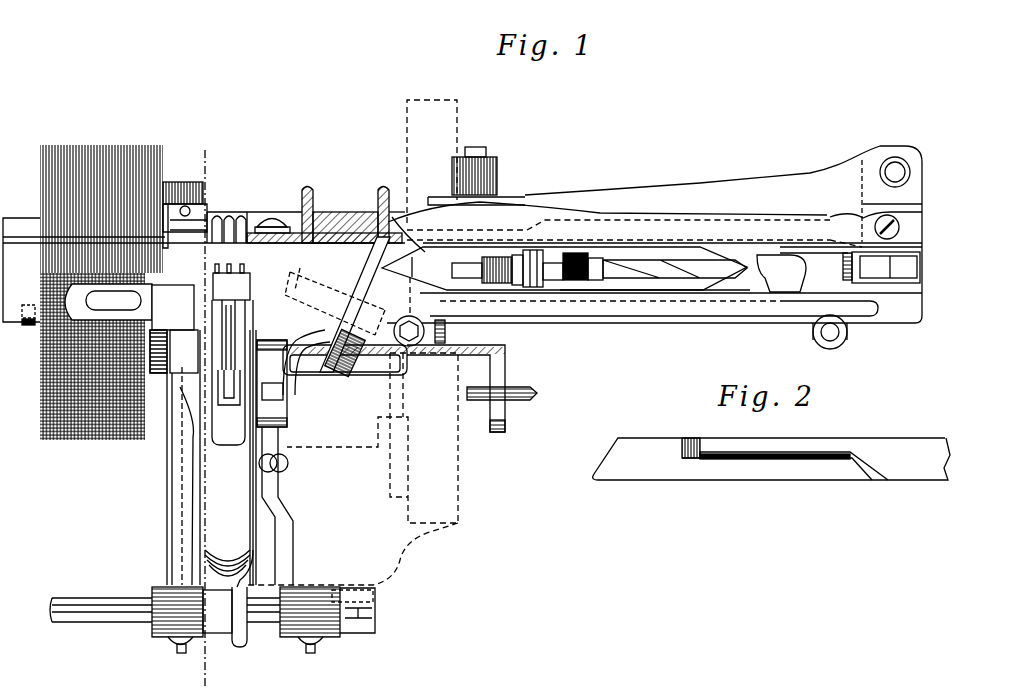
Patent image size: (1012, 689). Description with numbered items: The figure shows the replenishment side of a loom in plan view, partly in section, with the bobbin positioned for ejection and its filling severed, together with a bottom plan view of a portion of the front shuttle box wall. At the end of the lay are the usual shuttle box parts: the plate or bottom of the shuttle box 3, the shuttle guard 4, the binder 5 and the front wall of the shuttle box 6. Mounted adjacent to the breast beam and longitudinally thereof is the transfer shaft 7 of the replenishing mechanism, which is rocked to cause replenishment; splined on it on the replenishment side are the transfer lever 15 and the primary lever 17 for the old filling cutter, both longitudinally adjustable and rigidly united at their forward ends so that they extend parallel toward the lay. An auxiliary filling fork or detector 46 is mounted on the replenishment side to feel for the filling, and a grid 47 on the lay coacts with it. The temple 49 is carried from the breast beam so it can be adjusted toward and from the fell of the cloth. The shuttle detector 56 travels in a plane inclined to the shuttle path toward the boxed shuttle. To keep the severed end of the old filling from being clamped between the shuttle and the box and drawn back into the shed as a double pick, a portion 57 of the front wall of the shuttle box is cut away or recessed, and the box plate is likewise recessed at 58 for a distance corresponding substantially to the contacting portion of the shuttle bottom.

In FIG. 1, the plate or bottom of the shuttle box 3 is at (867, 293).
In FIG. 1, the shuttle guard 4 is at (586, 170).
In FIG. 1, the binder 5 is at (692, 192).
In FIG. 1, the front wall of the shuttle box 6 is at (543, 308).
In FIG. 2, the front wall of the shuttle box 6 is at (916, 452).
In FIG. 1, the transfer shaft 7 is at (118, 624).
In FIG. 1, the transfer lever 15 is at (278, 512).
In FIG. 1, the primary lever for the old filling cutter 17 is at (175, 500).
In FIG. 1, the auxiliary filling fork or detector 46 is at (250, 283).
In FIG. 1, the grid 47 is at (229, 215).
In FIG. 1, the temple 49 is at (152, 297).
In FIG. 1, the shuttle detector 56 is at (377, 256).
In FIG. 2, the recessed portion of the front wall of the shuttle box 57 is at (766, 469).
In FIG. 1, the recessed portion of the box plate 58 is at (413, 296).